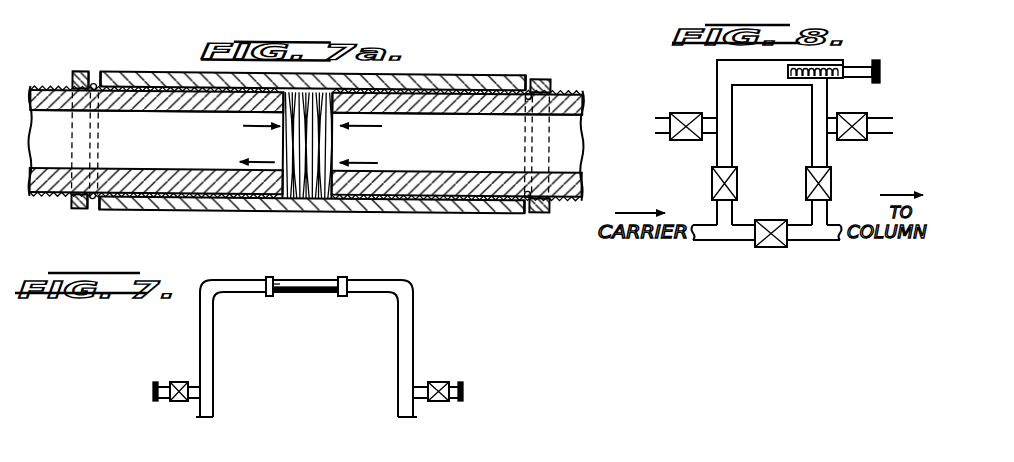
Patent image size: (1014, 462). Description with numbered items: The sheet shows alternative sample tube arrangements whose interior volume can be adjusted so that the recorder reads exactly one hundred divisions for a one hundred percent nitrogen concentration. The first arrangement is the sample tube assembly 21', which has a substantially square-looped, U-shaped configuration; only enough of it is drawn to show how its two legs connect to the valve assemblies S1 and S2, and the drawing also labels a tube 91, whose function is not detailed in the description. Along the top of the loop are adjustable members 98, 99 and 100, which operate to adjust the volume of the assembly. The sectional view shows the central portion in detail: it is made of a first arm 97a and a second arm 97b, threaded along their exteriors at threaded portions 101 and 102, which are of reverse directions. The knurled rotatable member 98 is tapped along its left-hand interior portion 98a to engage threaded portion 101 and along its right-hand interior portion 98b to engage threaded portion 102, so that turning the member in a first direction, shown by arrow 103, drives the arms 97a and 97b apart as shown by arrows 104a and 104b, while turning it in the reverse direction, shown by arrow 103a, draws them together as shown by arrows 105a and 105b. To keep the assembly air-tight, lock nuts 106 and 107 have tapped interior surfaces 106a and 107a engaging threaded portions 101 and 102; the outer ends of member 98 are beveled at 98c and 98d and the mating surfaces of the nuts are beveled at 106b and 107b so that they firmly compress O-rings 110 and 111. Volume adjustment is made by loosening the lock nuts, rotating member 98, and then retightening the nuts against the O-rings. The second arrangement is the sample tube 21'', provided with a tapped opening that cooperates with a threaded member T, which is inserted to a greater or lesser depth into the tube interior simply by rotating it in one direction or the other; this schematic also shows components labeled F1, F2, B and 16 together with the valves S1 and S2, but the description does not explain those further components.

In FIG. 7A, the first arm 97a is at (42, 87).
In FIG. 7A, the second arm 97b is at (575, 86).
In FIG. 7A, the rotatable member 98 is at (417, 71).
In FIG. 7, the rotatable member 98 is at (304, 282).
In FIG. 7A, the left-hand interior portion 98a is at (182, 90).
In FIG. 7A, the right-hand interior portion 98b is at (478, 88).
In FIG. 7A, the beveled outer end 98c is at (97, 90).
In FIG. 7A, the beveled outer end 98d is at (528, 60).
In FIG. 7A, the lock nut 106 is at (78, 70).
In FIG. 7A, the tapped interior surface 106a is at (80, 100).
In FIG. 7A, the beveled mating surface 106b is at (90, 72).
In FIG. 7A, the O-ring 110 is at (100, 98).
In FIG. 7A, the threaded portion 101 is at (173, 113).
In FIG. 7A, the threaded portion 102 is at (478, 96).
In FIG. 7A, the lock nut 107 is at (540, 75).
In FIG. 7A, the tapped interior surface 107a is at (550, 84).
In FIG. 7A, the beveled mating surface 107b is at (542, 75).
In FIG. 7A, the O-ring 111 is at (527, 186).
In FIG. 7A, the arrow 105a is at (243, 124).
In FIG. 7A, the arrow 105b is at (360, 123).
In FIG. 7A, the arrow 104a is at (250, 160).
In FIG. 7A, the arrow 104b is at (360, 160).
In FIG. 7, the tube 91 is at (242, 295).
In FIG. 7, the adjustable member 99 is at (274, 264).
In FIG. 7, the adjustable member 100 is at (347, 278).
In FIG. 7, the arrow 103 is at (318, 296).
In FIG. 7, the arrow 103a is at (283, 296).
In FIG. 7, the sample tube assembly 21' is at (370, 266).
In FIG. 8, the sample tube 21'' is at (749, 142).
In FIG. 7, the valve assembly S1 is at (188, 382).
In FIG. 8, the valve assembly S1 is at (712, 181).
In FIG. 7, the valve assembly S2 is at (434, 383).
In FIG. 8, the valve assembly S2 is at (831, 183).
In FIG. 8, the flow controller F1 is at (698, 142).
In FIG. 8, the flow controller F2 is at (848, 139).
In FIG. 8, the threaded member T is at (880, 70).
In FIG. 8, the bypass valve B is at (772, 220).
In FIG. 8, the carrier gas conduit 16 is at (835, 223).